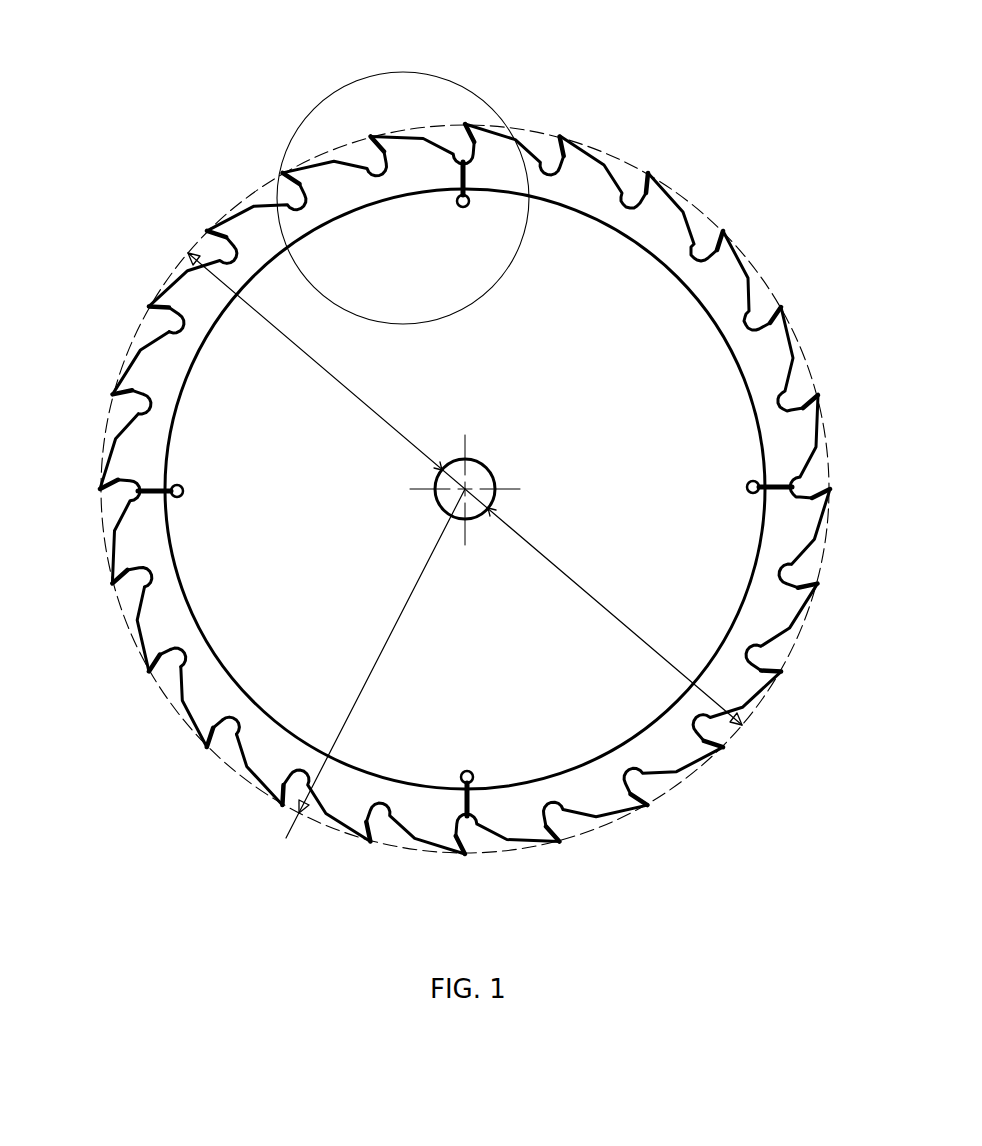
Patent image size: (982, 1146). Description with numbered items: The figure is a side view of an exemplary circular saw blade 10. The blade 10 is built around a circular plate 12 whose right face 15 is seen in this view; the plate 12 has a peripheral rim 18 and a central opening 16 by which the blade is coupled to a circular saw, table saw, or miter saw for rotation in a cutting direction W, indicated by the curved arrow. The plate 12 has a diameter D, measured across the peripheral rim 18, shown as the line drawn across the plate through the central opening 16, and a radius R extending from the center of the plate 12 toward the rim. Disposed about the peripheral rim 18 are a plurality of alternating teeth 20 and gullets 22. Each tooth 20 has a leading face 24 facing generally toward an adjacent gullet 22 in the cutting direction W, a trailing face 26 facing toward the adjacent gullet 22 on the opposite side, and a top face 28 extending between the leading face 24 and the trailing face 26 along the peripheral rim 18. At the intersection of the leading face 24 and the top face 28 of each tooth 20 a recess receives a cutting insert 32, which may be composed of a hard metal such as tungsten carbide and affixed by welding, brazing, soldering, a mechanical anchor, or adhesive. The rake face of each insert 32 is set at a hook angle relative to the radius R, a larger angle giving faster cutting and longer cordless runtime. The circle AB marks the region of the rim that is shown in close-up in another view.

The saw blade 10 is at (693, 112).
The circular plate 12 is at (697, 328).
The right face 15 is at (710, 620).
The central opening 16 is at (480, 520).
The peripheral rim 18 is at (137, 362).
The tooth 20 is at (147, 653).
The gullet 22 is at (180, 648).
The leading face 24 is at (227, 727).
The trailing face 26 is at (230, 747).
The top face 28 is at (267, 793).
The cutting insert 32 is at (812, 400).
The diameter D is at (572, 582).
The radius R is at (356, 691).
The cutting direction W is at (303, 73).
The circle AB is at (493, 112).